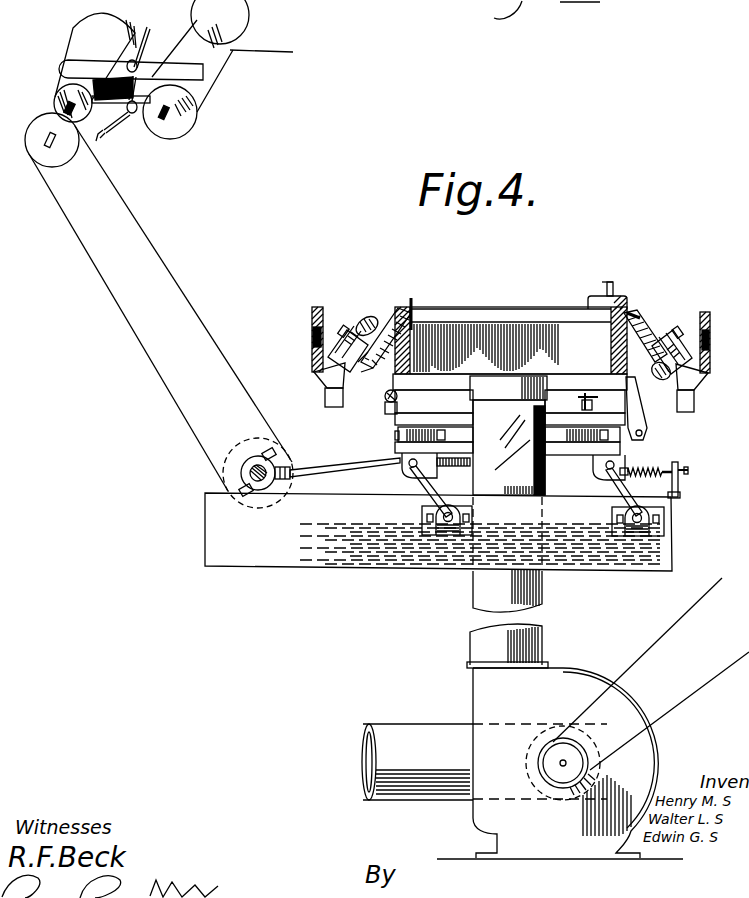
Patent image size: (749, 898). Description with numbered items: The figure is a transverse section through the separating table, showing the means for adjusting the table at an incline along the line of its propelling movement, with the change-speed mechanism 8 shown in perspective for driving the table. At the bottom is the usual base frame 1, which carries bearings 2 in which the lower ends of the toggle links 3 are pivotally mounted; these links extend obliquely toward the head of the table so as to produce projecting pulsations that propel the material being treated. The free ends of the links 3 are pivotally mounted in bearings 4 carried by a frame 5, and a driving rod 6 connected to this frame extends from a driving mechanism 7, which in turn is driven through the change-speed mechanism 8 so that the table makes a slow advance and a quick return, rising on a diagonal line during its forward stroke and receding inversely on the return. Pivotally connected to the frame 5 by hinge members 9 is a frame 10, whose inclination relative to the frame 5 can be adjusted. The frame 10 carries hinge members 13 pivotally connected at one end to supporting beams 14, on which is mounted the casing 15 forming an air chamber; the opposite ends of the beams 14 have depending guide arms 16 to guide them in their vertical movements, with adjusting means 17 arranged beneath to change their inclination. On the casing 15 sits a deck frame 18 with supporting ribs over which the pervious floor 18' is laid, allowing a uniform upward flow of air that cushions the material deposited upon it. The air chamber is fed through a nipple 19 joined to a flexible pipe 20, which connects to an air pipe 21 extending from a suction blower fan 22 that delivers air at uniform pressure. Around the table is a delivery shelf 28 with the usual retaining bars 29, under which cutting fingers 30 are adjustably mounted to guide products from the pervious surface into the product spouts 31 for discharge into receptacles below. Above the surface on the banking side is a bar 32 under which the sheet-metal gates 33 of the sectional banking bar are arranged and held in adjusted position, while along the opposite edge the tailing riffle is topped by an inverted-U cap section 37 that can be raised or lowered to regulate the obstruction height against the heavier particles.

The base frame 1 is at (300, 562).
The bearings 2 is at (447, 534).
The toggle links 3 is at (617, 488).
The bearings 4 is at (410, 471).
The frame 5 is at (580, 447).
The driving rod 6 is at (338, 466).
The driving mechanism 7 is at (255, 490).
The change-speed mechanism 8 is at (151, 70).
The hinge members 9 is at (397, 434).
The frame 10 is at (434, 407).
The hinge members 13 is at (388, 401).
The supporting beams 14 is at (377, 363).
The casing 15 is at (517, 340).
The guide arms 16 is at (638, 413).
The adjusting means 17 is at (606, 400).
The deck frame 18 is at (510, 304).
The pervious floor 18' is at (510, 298).
The nipple 19 is at (508, 387).
The flexible pipe 20 is at (509, 447).
The air pipe 21 is at (507, 590).
The suction blower fan 22 is at (555, 718).
The delivery shelf 28 is at (395, 372).
The retaining bars 29 is at (341, 330).
The cutting fingers 30 is at (370, 318).
The product spouts 31 is at (328, 379).
The bar 32 is at (622, 281).
The gates 33 is at (603, 297).
The cap section 37 is at (413, 305).